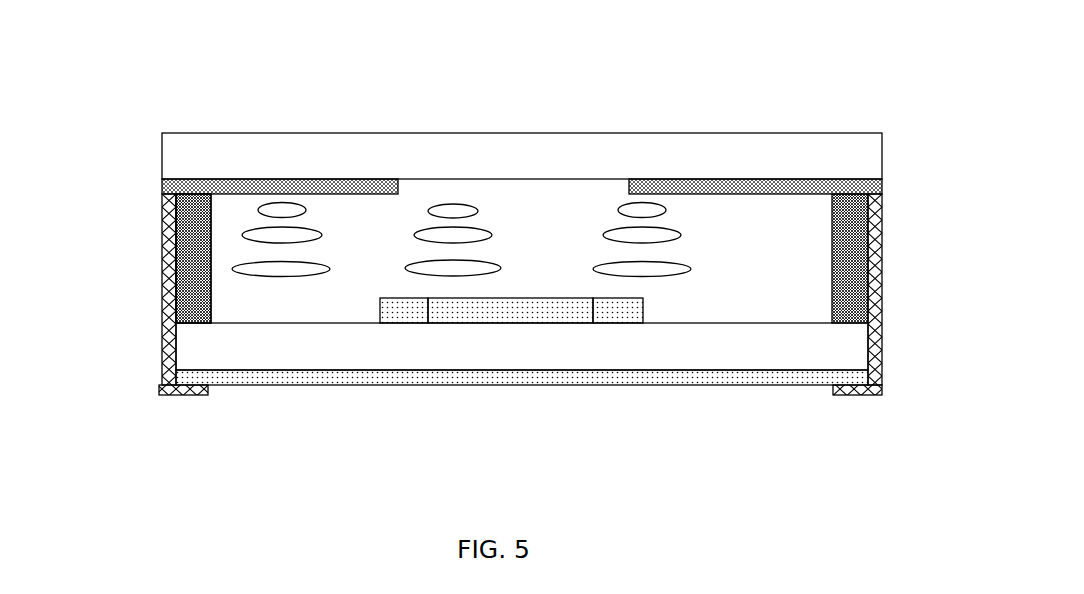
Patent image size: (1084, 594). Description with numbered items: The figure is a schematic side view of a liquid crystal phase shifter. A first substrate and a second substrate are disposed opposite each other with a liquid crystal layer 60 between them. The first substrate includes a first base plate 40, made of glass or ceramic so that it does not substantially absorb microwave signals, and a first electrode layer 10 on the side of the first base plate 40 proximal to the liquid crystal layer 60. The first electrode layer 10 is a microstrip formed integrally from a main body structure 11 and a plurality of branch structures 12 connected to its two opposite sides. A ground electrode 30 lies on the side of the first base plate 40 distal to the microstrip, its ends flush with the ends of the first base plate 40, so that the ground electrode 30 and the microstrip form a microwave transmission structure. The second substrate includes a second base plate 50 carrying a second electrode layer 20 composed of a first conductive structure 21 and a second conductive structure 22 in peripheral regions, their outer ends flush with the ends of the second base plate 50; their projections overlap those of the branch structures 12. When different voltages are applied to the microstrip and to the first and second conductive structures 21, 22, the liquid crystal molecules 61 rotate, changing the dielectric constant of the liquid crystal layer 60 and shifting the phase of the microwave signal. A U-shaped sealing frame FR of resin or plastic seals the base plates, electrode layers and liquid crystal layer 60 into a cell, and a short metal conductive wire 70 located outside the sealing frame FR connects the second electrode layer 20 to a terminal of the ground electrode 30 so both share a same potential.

The first electrode layer 10 is at (511, 406).
The main body structure 11 is at (480, 312).
The branch structures 12 is at (407, 312).
The second electrode layer 20 is at (522, 104).
The first conductive structure 21 is at (340, 188).
The second conductive structure 22 is at (655, 52).
The ground electrode 30 is at (737, 377).
The first base plate 40 is at (257, 347).
The second base plate 50 is at (402, 147).
The liquid crystal layer 60 is at (232, 242).
The liquid crystal molecules 61 is at (262, 229).
The conductive wire 70 is at (877, 265).
The sealing frame FR is at (205, 297).